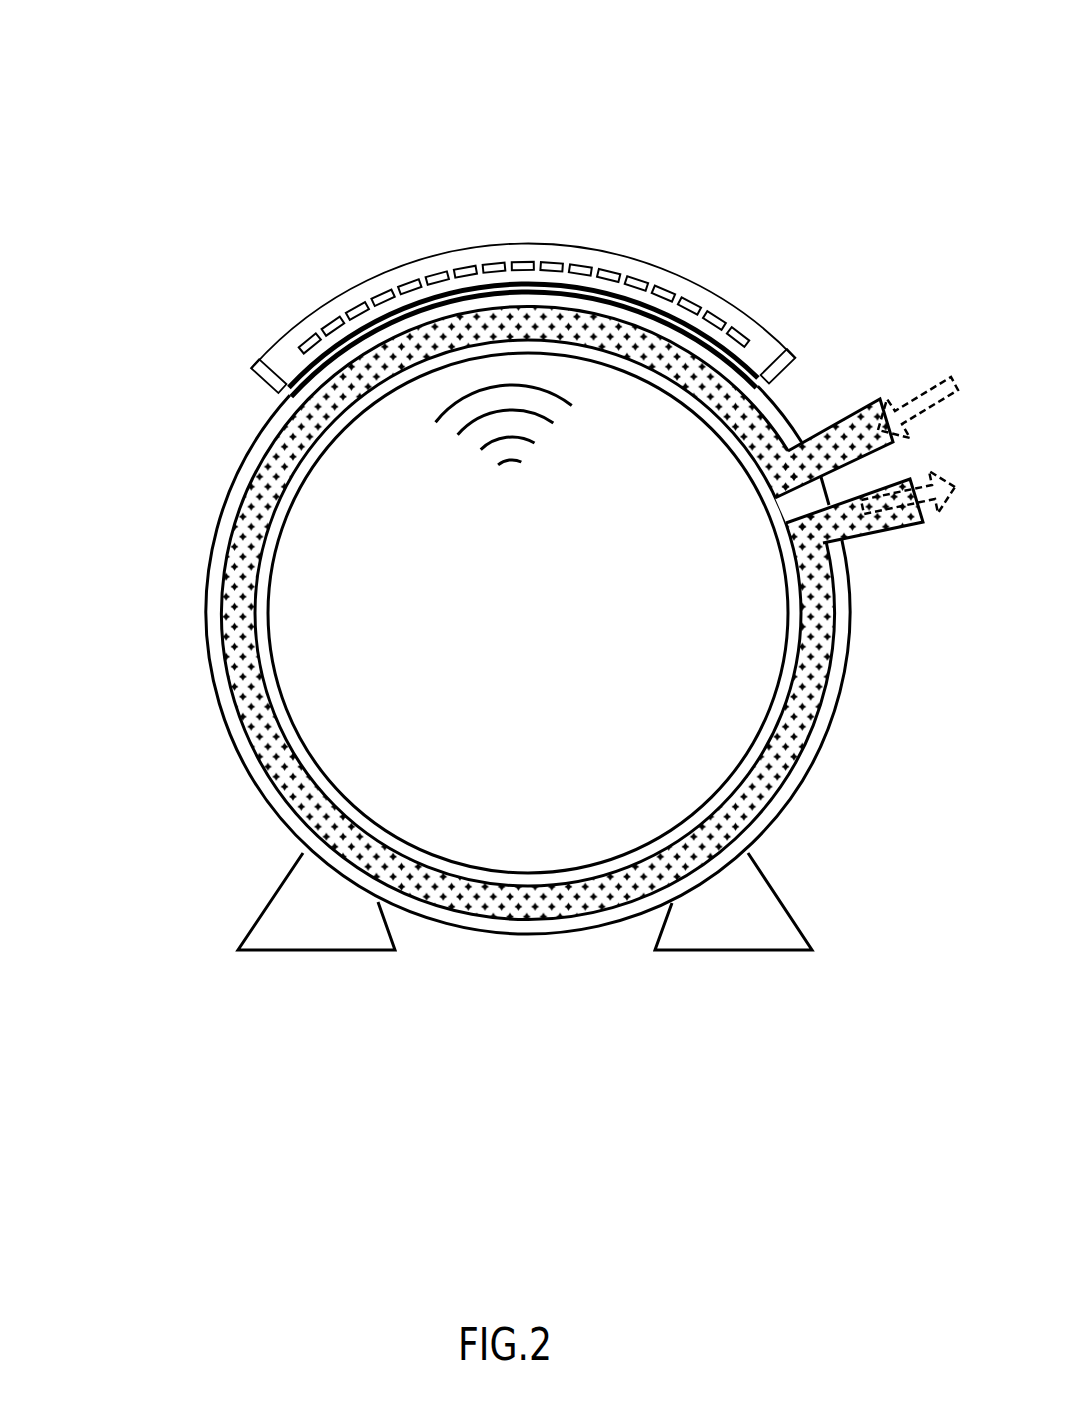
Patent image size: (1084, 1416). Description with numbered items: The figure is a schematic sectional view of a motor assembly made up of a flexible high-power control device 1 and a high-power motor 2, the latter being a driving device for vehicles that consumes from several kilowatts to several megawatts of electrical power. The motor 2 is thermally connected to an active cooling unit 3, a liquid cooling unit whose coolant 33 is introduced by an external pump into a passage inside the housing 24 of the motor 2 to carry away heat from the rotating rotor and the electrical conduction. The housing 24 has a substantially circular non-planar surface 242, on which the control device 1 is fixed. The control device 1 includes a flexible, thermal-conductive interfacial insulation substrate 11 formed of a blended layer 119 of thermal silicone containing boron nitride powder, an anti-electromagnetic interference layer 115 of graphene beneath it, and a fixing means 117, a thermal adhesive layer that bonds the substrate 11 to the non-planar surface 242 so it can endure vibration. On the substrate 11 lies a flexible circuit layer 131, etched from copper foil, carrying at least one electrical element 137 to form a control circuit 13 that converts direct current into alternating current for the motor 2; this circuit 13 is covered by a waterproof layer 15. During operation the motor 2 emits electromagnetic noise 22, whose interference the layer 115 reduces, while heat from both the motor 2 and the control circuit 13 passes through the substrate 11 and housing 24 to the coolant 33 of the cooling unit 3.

The flexible high-power control device 1 is at (340, 257).
The high-power motor 2 is at (848, 870).
The active cooling unit 3 is at (887, 530).
The interfacial insulation substrate 11 is at (120, 270).
The control circuit 13 is at (851, 130).
The waterproof layer 15 is at (406, 268).
The electromagnetic noise 22 is at (490, 445).
The housing 24 is at (232, 725).
The coolant 33 is at (795, 738).
The anti-electromagnetic interference layer 115 is at (266, 362).
The fixing means 117 is at (277, 414).
The blended layer 119 is at (277, 388).
The flexible circuit layer 131 is at (662, 283).
The electrical element 137 is at (606, 272).
The non-planar surface 242 is at (248, 786).